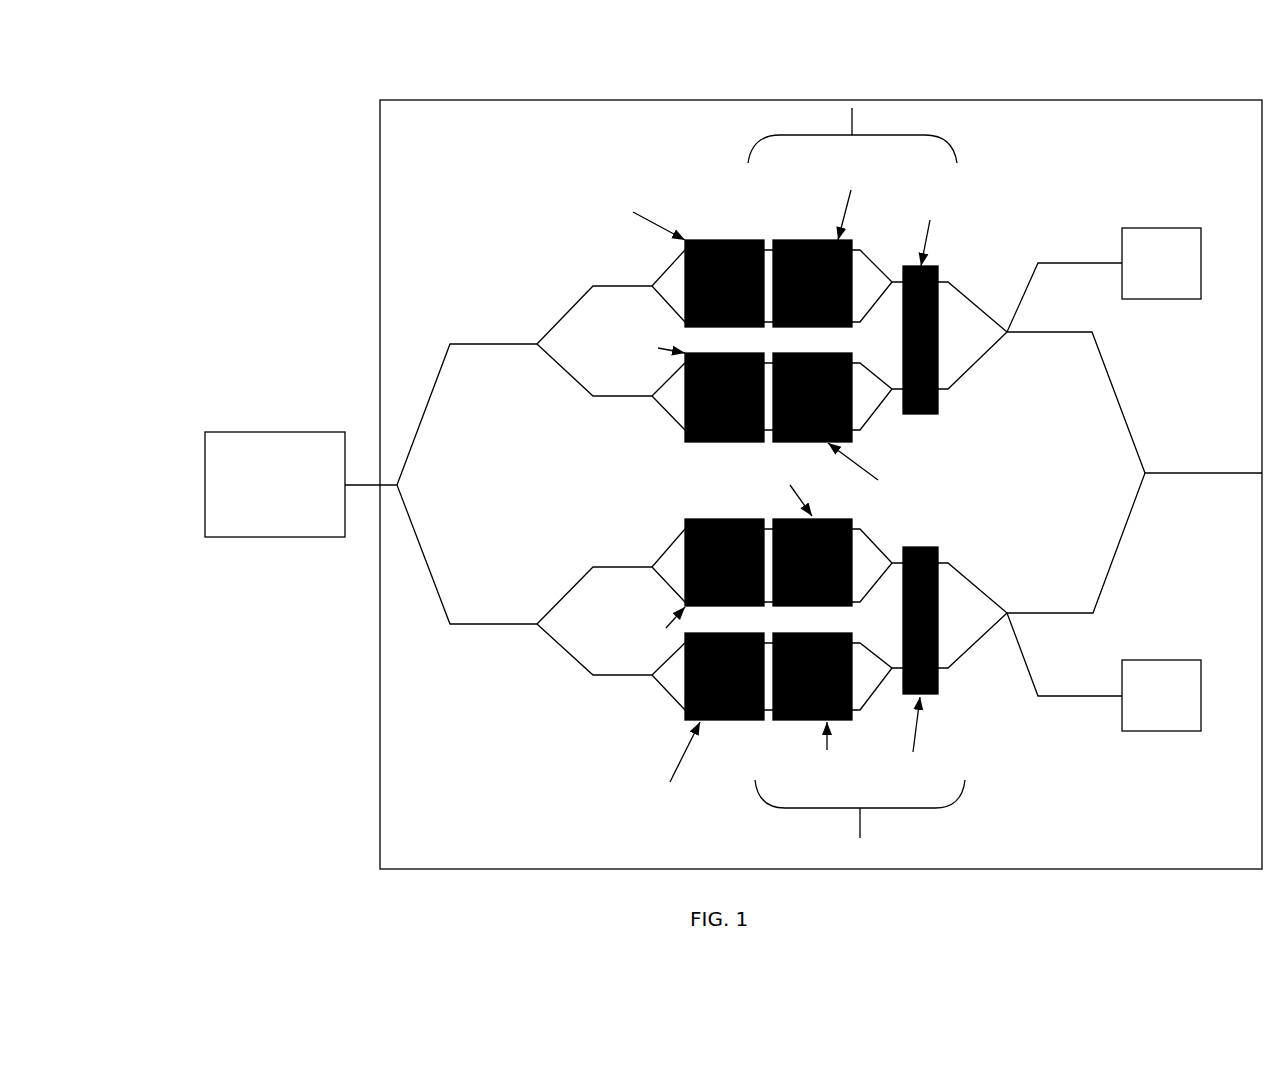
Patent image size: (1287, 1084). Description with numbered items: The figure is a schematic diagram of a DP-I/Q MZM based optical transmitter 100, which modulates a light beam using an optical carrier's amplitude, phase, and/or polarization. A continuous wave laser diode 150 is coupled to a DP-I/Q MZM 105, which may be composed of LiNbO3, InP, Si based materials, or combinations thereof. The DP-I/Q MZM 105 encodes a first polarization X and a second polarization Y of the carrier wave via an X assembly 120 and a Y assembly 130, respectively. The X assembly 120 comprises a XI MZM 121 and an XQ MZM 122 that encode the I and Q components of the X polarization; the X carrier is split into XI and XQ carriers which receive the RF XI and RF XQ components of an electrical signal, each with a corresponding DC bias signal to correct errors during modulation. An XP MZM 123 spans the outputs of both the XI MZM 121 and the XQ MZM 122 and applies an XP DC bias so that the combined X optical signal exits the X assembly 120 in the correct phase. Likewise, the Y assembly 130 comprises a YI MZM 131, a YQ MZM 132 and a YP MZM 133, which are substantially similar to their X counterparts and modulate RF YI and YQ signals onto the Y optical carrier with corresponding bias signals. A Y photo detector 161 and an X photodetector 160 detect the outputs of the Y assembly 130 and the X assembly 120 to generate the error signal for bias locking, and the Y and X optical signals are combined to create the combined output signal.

The DP-I/Q MZM based optical transmitter 100 is at (208, 177).
The DP-I/Q MZM 105 is at (379, 222).
The continuous wave laser diode 150 is at (292, 432).
The Y assembly 130 is at (505, 272).
The YI MZM 131 is at (720, 205).
The YQ MZM 132 is at (612, 413).
The YP MZM 133 is at (960, 262).
The X assembly 120 is at (532, 730).
The XI MZM 121 is at (590, 535).
The XQ MZM 122 is at (738, 745).
The XP MZM 123 is at (952, 538).
The X photodetector 160 is at (1160, 731).
The Y photo detector 161 is at (1155, 299).